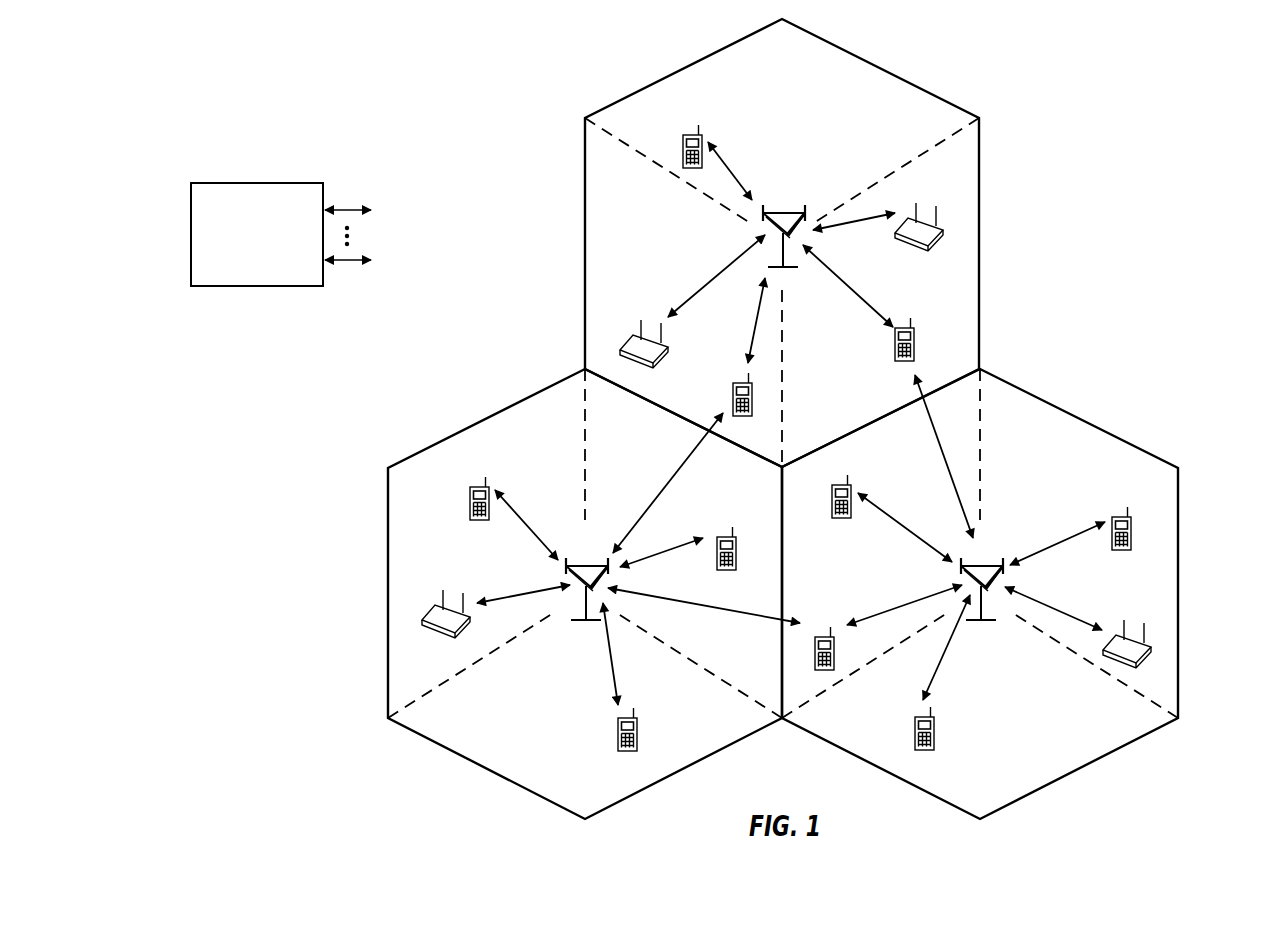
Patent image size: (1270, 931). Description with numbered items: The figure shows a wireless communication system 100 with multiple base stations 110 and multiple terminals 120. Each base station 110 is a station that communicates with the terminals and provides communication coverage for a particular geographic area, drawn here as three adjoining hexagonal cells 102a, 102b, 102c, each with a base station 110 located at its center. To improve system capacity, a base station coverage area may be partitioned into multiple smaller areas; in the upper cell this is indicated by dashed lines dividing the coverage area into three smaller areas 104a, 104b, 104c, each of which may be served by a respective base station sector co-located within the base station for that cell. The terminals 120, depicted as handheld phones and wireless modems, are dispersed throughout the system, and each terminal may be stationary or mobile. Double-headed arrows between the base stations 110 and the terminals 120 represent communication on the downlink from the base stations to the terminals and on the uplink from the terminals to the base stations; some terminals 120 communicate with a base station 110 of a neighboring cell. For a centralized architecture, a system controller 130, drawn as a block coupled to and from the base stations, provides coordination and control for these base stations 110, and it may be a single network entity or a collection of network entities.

The wireless communication system 100 is at (1113, 81).
The geographic area 102a is at (881, 67).
The geographic area 102b is at (497, 414).
The geographic area 102c is at (1075, 415).
The smaller area 104a is at (803, 76).
The smaller area 104b is at (641, 216).
The smaller area 104c is at (871, 408).
The base station 110 is at (780, 209).
The terminal 120 is at (683, 142).
The system controller 130 is at (252, 183).